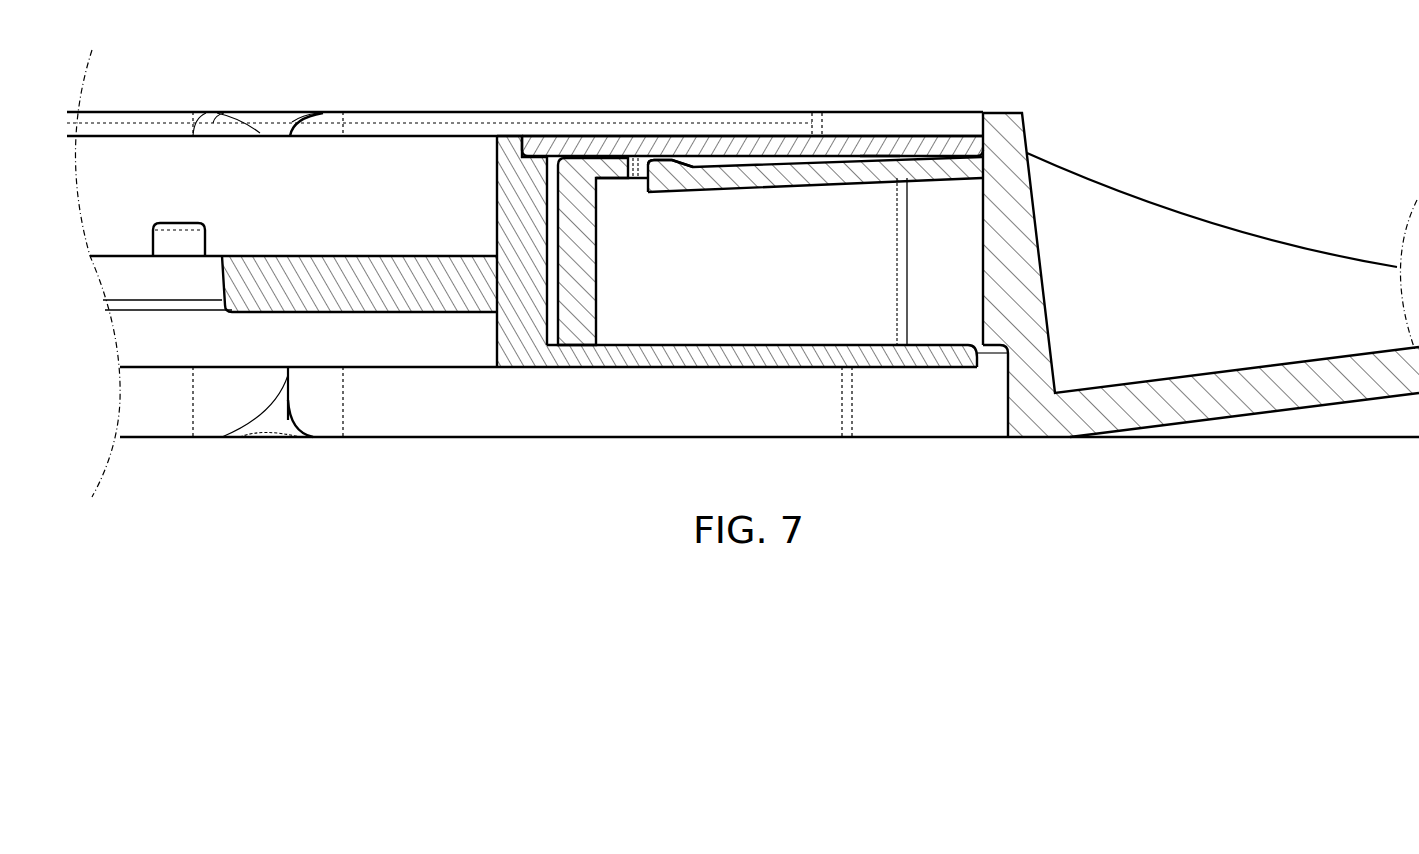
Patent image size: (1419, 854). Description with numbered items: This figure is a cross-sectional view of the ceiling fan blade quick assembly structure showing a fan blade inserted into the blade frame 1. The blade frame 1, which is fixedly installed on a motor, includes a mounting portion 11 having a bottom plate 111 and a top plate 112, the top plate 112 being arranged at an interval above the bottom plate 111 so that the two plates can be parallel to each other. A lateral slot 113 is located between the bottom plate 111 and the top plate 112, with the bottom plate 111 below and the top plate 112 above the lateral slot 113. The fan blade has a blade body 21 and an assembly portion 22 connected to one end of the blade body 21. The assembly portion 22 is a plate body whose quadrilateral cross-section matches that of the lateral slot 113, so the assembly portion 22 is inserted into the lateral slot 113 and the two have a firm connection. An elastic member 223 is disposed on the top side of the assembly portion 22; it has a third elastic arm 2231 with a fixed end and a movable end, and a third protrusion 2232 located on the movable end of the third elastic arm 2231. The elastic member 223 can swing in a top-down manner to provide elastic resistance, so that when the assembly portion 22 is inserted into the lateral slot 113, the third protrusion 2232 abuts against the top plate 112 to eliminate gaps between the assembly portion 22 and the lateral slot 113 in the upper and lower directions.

The blade frame 1 is at (754, 286).
The mounting portion 11 is at (675, 367).
The bottom plate 111 is at (737, 355).
The top plate 112 is at (933, 145).
The lateral slot 113 is at (875, 143).
The blade body 21 is at (1190, 403).
The assembly portion 22 is at (580, 245).
The elastic member 223 is at (815, 134).
The third elastic arm 2231 is at (762, 170).
The third protrusion 2232 is at (673, 160).